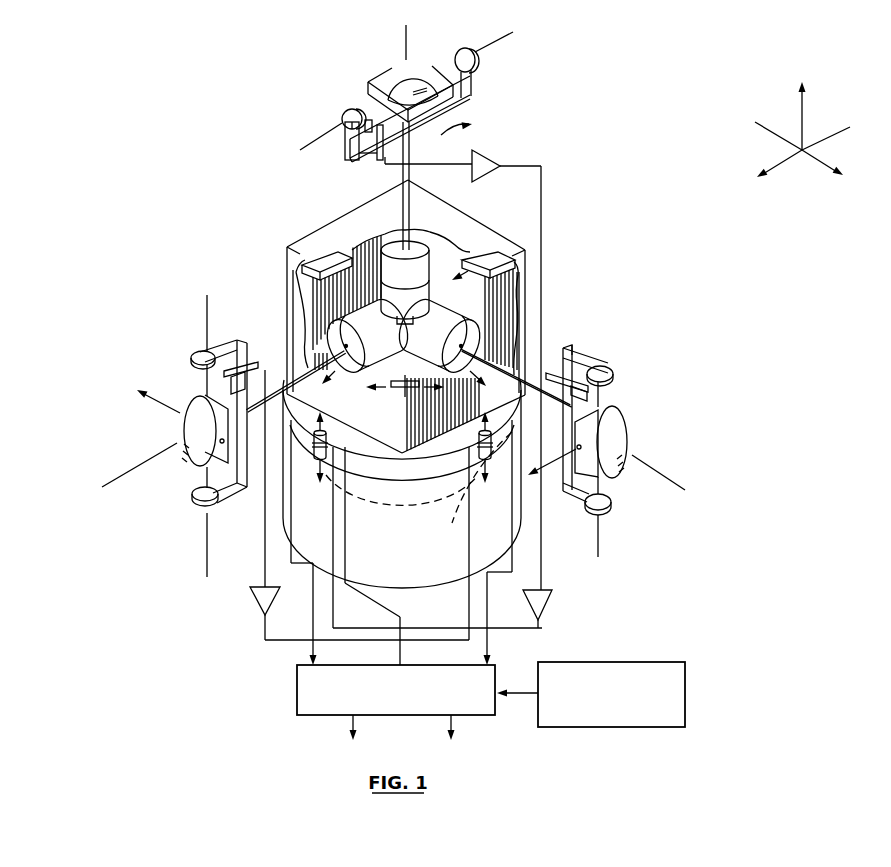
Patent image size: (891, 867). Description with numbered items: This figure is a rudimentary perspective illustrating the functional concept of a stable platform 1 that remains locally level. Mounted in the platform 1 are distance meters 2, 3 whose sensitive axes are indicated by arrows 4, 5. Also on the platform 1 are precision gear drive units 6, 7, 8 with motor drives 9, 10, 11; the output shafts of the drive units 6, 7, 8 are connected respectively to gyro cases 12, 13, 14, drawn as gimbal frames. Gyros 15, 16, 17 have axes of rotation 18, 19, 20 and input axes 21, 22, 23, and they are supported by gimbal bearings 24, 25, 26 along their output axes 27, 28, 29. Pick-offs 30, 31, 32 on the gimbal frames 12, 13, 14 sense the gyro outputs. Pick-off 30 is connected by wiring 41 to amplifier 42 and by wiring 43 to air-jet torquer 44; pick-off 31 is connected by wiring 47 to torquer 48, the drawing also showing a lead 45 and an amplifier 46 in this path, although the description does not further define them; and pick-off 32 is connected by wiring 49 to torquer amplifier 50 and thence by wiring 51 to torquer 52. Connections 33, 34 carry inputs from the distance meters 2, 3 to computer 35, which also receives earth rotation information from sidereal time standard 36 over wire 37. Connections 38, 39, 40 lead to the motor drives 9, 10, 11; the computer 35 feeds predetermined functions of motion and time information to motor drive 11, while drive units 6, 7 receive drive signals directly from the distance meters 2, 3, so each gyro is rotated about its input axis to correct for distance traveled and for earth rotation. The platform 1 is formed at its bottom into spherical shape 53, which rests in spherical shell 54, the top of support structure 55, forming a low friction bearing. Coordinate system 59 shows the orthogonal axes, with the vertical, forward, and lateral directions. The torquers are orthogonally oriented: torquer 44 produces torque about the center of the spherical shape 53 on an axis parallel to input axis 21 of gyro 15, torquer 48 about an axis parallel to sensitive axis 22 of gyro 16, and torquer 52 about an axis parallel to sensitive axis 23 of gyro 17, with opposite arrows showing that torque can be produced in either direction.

The stable platform 1 is at (352, 211).
The distance meter 2 is at (488, 258).
The distance meter 3 is at (315, 256).
The arrow 4 is at (484, 268).
The arrow 5 is at (407, 334).
The precision gear drive unit 6 is at (452, 331).
The precision gear drive unit 7 is at (360, 346).
The precision gear drive unit 8 is at (417, 247).
The motor drive 9 is at (432, 323).
The motor drive 10 is at (390, 329).
The motor drive 11 is at (400, 295).
The gyro case 12 is at (578, 352).
The gyro case 13 is at (224, 350).
The gyro case 14 is at (472, 85).
The gyro 15 is at (628, 441).
The gyro 16 is at (184, 432).
The gyro 17 is at (400, 62).
The axis of rotation 18 is at (548, 464).
The axis of rotation 19 is at (158, 400).
The axis of rotation 20 is at (449, 139).
The input axis 21 is at (662, 474).
The input axis 22 is at (135, 468).
The input axis 23 is at (404, 34).
The gimbal bearing 24 is at (612, 368).
The gimbal bearing 25 is at (198, 354).
The gimbal bearing 26 is at (478, 60).
The output axis 27 is at (600, 535).
The output axis 28 is at (205, 549).
The output axis 29 is at (320, 138).
The pick-off 30 is at (558, 372).
The pick-off 31 is at (252, 364).
The pick-off 32 is at (380, 160).
The connection 33 is at (488, 590).
The connection 34 is at (312, 595).
The computer 35 is at (497, 668).
The sidereal time standard 36 is at (667, 672).
The wire 37 is at (530, 697).
The connection 38 is at (487, 388).
The connection 39 is at (313, 358).
The connection 40 is at (347, 542).
The wiring 41 is at (543, 550).
The amplifier 42 is at (553, 593).
The wiring 43 is at (333, 500).
The air-jet torquer 44 is at (314, 459).
The signal lead 45 is at (265, 530).
The amplifier 46 is at (256, 613).
The wiring 47 is at (289, 642).
The torquer 48 is at (491, 460).
The wiring 49 is at (443, 166).
The torquer amplifier 50 is at (494, 156).
The wiring 51 is at (543, 212).
The torquer 52 is at (396, 397).
The spherical shape 53 is at (396, 507).
The spherical shell 54 is at (453, 523).
The support structure 55 is at (425, 570).
The coordinate system 59 is at (807, 140).